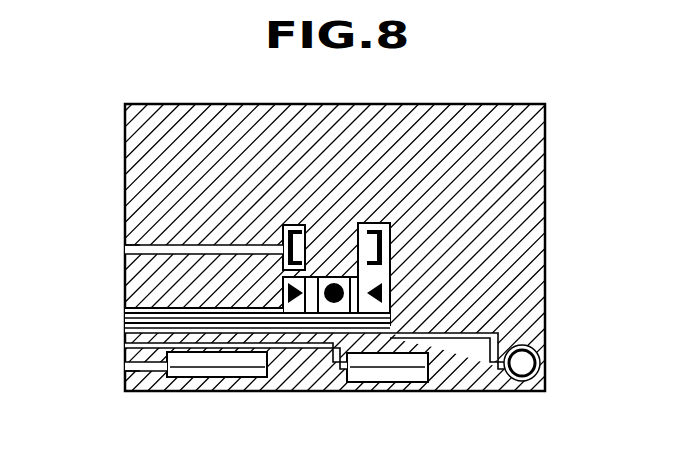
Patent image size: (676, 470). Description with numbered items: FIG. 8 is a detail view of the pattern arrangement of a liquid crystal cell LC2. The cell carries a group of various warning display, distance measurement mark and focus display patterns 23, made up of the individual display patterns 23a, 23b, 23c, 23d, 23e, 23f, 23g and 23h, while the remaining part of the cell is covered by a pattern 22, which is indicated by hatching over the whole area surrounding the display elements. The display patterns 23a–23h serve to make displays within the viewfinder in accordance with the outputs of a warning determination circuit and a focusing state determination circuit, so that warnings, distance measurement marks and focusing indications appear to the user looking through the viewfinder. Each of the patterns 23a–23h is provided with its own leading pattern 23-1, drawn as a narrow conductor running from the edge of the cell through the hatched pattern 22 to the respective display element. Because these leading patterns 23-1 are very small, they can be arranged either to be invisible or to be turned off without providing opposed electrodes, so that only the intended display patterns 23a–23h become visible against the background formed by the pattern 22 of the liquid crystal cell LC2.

The pattern 22 is at (533, 170).
The liquid crystal cell LC2 is at (537, 285).
The display patterns 23 is at (261, 328).
The display pattern 23a is at (125, 249).
The display pattern 23b is at (125, 309).
The display pattern 23c is at (125, 315).
The display pattern 23d is at (125, 320).
The display pattern 23e is at (125, 325).
The display pattern 23f is at (125, 330).
The display pattern 23g is at (125, 345).
The display pattern 23h is at (112, 395).
The leading patterns 23-1 is at (125, 245).